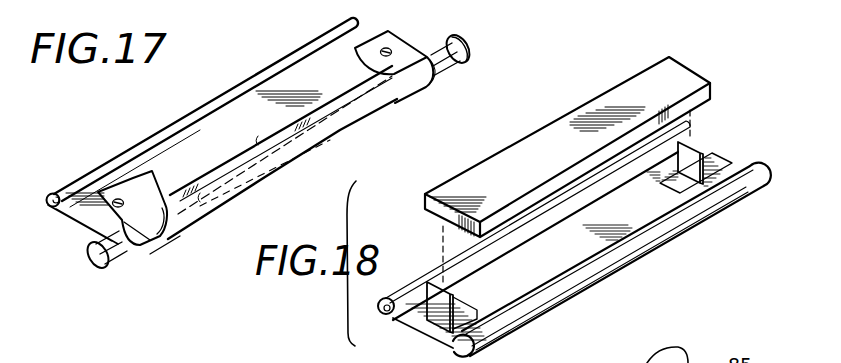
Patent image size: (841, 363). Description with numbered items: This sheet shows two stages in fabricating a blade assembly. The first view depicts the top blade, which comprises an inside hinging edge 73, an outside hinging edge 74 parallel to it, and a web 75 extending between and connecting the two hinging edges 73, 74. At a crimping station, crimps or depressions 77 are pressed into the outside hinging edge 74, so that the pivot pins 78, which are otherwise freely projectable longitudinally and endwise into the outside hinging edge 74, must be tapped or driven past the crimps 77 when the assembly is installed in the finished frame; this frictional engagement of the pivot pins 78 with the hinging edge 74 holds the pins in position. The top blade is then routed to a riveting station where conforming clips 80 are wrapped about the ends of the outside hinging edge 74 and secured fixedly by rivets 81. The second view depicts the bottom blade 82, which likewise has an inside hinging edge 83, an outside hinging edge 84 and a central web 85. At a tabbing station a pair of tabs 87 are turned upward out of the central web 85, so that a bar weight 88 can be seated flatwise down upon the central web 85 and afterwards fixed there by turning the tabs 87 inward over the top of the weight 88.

In FIG. 17, the inside hinging edge 73 is at (181, 119).
In FIG. 17, the outside hinging edge 74 is at (272, 169).
In FIG. 17, the web 75 is at (228, 115).
In FIG. 17, the crimps or depressions 77 is at (339, 110).
In FIG. 17, the pivot pins 78 is at (451, 66).
In FIG. 17, the conforming clips 80 is at (417, 92).
In FIG. 17, the rivets 81 is at (389, 50).
In FIG. 18, the bottom blade 82 is at (574, 239).
In FIG. 18, the inside hinging edge 83 is at (413, 283).
In FIG. 18, the outside hinging edge 84 is at (522, 317).
In FIG. 18, the central web 85 is at (582, 278).
In FIG. 18, the tabs 87 is at (418, 325).
In FIG. 18, the bar weight 88 is at (523, 150).